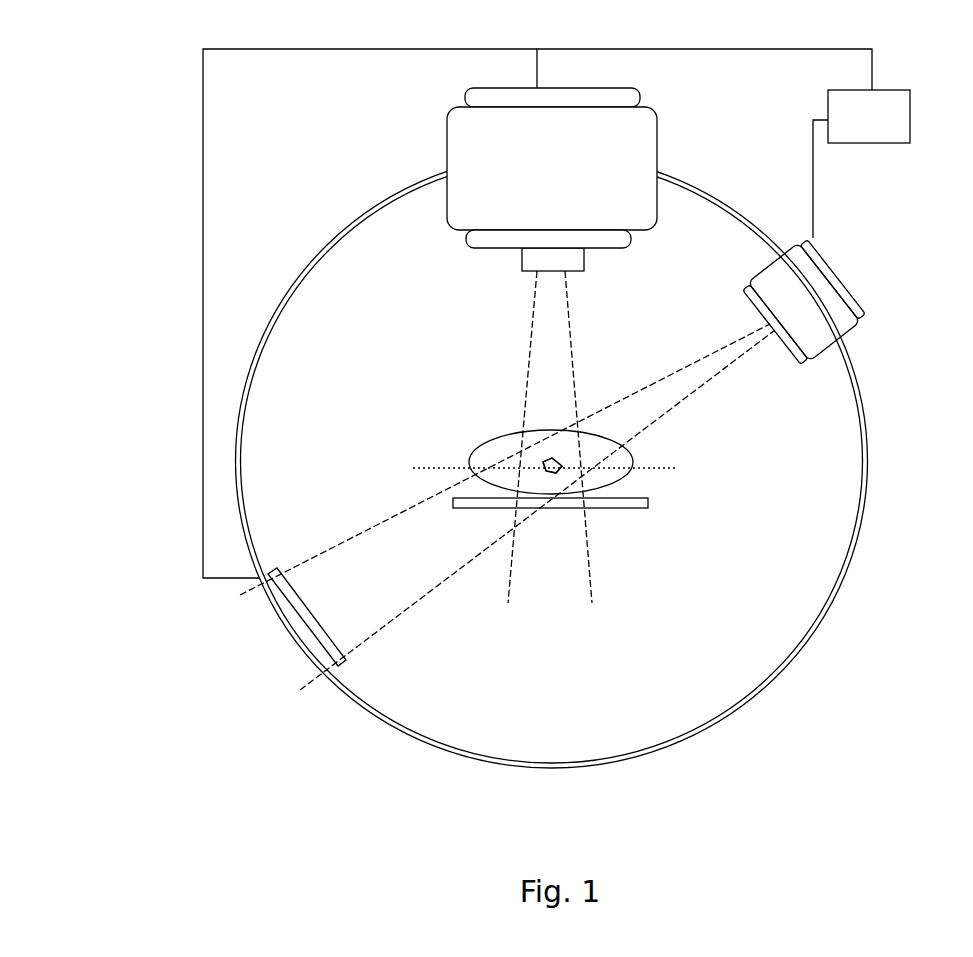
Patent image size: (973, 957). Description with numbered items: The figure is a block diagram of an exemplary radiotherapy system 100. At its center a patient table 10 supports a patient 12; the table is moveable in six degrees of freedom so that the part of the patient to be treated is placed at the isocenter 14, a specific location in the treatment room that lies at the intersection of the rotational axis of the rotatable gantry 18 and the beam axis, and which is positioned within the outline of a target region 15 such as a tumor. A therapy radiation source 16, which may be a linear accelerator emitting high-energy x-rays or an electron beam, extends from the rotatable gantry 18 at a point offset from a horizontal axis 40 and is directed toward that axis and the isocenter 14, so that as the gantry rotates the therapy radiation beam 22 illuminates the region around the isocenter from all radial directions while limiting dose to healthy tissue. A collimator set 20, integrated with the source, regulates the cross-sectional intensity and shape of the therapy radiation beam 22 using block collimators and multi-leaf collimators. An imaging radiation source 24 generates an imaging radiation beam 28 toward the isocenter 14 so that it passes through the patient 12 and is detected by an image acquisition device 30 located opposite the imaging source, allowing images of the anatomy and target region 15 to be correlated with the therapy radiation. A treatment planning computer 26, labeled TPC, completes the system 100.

The radiotherapy system 100 is at (88, 28).
The patient table 10 is at (620, 508).
The patient 12 is at (630, 473).
The isocenter 14 is at (543, 460).
The target region 15 is at (553, 467).
The therapy radiation source 16 is at (493, 152).
The rotatable gantry 18 is at (677, 183).
The collimator set 20 is at (638, 240).
The therapy radiation beam 22 is at (533, 350).
The imaging radiation source 24 is at (817, 297).
The treatment planning computer 26 is at (910, 120).
The imaging radiation beam 28 is at (698, 380).
The imaging device 30 is at (297, 615).
The horizontal axis 40 is at (677, 469).